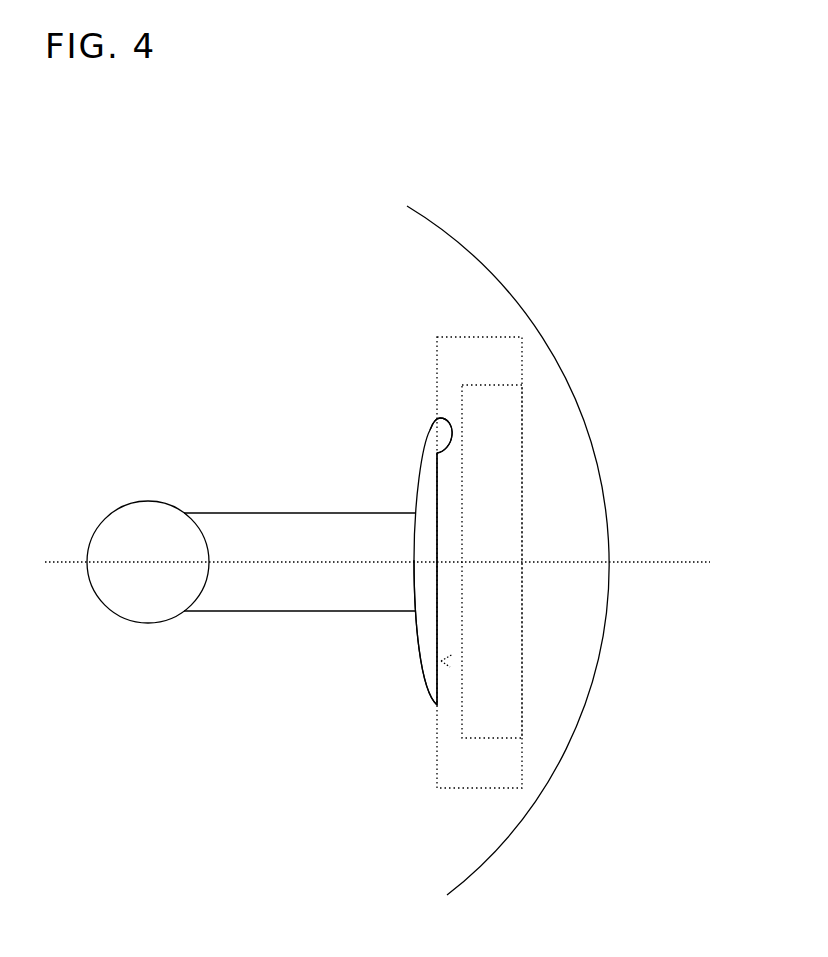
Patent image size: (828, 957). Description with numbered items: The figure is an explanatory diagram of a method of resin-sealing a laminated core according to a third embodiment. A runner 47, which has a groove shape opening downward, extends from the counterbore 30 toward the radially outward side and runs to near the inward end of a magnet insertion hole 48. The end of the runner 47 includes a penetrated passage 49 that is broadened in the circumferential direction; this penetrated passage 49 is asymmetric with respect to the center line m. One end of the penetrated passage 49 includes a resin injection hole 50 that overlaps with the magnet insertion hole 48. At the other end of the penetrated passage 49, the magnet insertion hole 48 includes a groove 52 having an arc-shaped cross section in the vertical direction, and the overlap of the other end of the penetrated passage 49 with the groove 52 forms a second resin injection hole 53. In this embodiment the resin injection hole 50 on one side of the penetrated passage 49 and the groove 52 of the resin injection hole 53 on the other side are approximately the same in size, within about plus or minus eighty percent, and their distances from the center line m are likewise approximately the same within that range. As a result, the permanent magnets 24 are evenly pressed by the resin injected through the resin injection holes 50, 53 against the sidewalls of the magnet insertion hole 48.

The permanent magnet 24 is at (493, 683).
The counterbore 30 is at (146, 587).
The runner 47 is at (263, 580).
The magnet insertion hole 48 is at (480, 771).
The penetrated passage 49 is at (428, 582).
The resin injection hole 50 is at (450, 432).
The groove 52 is at (441, 661).
The resin injection hole 53 is at (418, 692).
The center line m is at (655, 560).